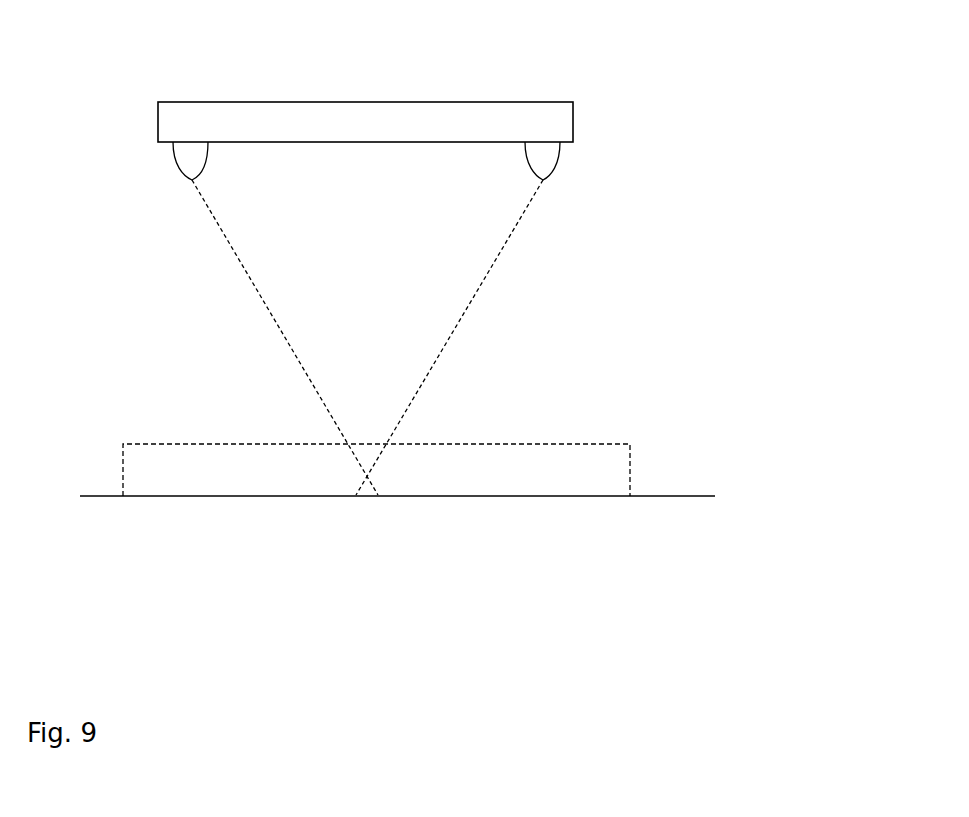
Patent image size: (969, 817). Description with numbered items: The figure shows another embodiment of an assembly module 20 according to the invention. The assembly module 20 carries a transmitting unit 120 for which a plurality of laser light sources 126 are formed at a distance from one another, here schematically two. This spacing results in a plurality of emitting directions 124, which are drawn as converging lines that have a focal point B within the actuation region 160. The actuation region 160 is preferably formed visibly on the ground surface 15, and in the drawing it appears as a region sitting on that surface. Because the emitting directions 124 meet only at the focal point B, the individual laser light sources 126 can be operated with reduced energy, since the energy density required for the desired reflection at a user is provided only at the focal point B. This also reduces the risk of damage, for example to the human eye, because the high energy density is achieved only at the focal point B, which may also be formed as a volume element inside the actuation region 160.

The transmitting unit 120 is at (568, 102).
The assembly module 20 is at (236, 92).
The laser light sources 126 is at (177, 159).
The emitting directions 124 is at (237, 257).
The focal point B is at (368, 458).
The actuation region 160 is at (618, 422).
The ground surface 15 is at (703, 496).